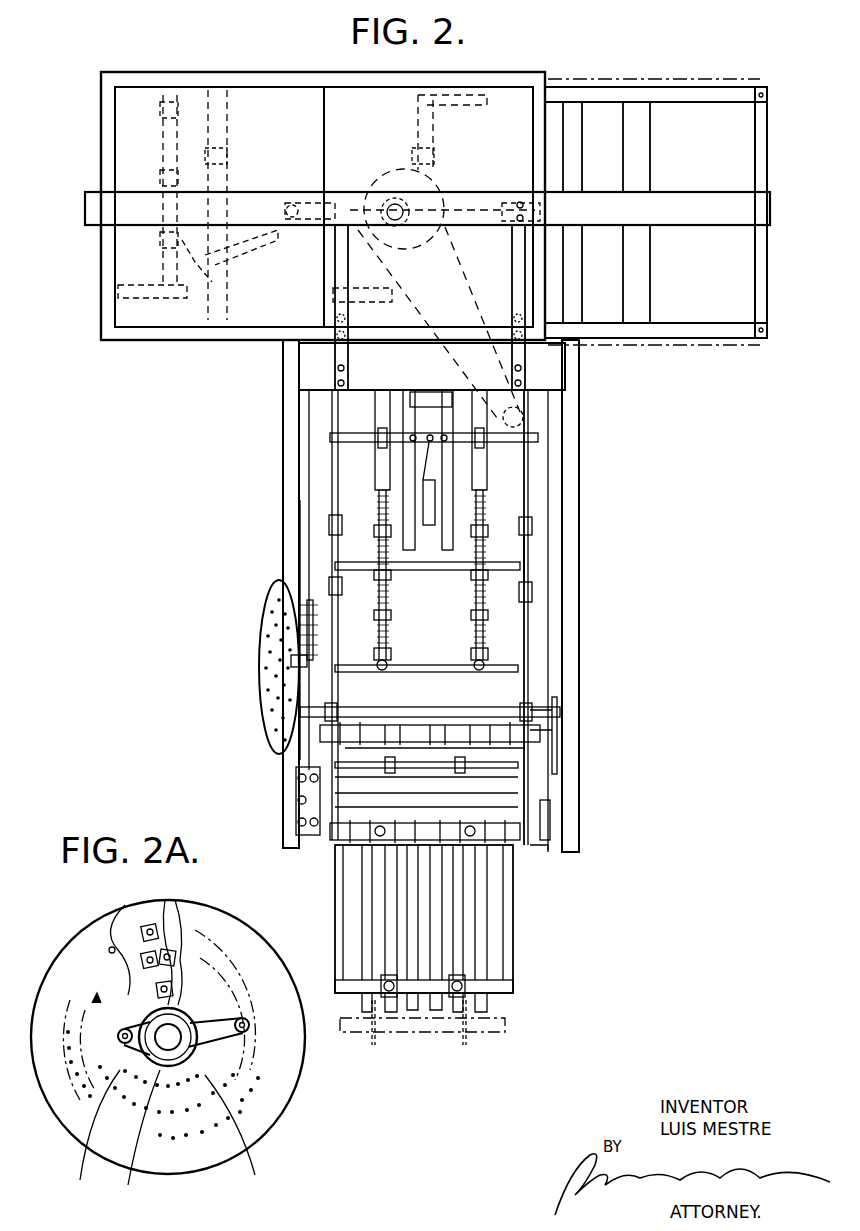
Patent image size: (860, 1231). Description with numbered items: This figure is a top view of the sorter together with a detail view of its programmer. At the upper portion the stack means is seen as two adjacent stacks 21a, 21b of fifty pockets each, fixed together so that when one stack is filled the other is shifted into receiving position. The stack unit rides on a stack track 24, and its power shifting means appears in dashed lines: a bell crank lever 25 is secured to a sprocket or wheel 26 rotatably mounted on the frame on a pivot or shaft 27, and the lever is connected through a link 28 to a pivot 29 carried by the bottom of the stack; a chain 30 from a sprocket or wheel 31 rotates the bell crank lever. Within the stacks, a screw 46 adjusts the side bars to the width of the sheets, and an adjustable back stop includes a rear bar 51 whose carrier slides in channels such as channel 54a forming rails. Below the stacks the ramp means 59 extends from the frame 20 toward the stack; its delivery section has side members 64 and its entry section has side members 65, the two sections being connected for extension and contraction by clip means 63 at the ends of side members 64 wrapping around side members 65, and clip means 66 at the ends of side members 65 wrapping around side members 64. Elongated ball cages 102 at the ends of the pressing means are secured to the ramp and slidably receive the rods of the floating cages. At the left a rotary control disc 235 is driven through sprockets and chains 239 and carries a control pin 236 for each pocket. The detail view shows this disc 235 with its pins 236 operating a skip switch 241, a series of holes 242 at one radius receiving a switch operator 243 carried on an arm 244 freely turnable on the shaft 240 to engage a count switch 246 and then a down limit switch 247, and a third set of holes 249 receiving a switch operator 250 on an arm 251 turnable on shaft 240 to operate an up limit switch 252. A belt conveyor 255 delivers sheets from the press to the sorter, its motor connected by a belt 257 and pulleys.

In FIG. 2, the frame 20 is at (266, 436).
In FIG. 2, the stack of pockets 21a is at (505, 103).
In FIG. 2, the stack of pockets 21b is at (300, 100).
In FIG. 2, the stack track 24 is at (697, 92).
In FIG. 2, the bell crank lever 25 is at (308, 195).
In FIG. 2, the sprocket or wheel 26 is at (369, 182).
In FIG. 2, the pivot or shaft 27 is at (412, 204).
In FIG. 2, the link 28 is at (473, 208).
In FIG. 2, the pivot 29 is at (522, 203).
In FIG. 2, the chain 30 is at (458, 262).
In FIG. 2, the sprocket or wheel 31 is at (527, 415).
In FIG. 2, the screw 46 is at (168, 152).
In FIG. 2, the rear bar 51 is at (230, 160).
In FIG. 2, the channel 54a is at (205, 95).
In FIG. 2, the ramp means 59 is at (548, 576).
In FIG. 2, the clip means 63 is at (530, 583).
In FIG. 2, the side members 64 is at (338, 392).
In FIG. 2, the side members 65 is at (335, 625).
In FIG. 2, the clip means 66 is at (530, 524).
In FIG. 2, the elongated ball cage 102 is at (380, 455).
In FIG. 2, the rotary control disc 235 is at (270, 732).
In FIG. 2A, the rotary control disc 235 is at (60, 972).
In FIG. 2, the control pin 236 is at (263, 622).
In FIG. 2A, the control pin 236 is at (110, 948).
In FIG. 2, the sprockets and chains 239 is at (300, 500).
In FIG. 2A, the shaft 240 is at (200, 1100).
In FIG. 2A, the skip switch 241 is at (170, 900).
In FIG. 2A, the holes 242 is at (230, 1085).
In FIG. 2A, the switch operator or pin 243 is at (250, 1025).
In FIG. 2A, the arm 244 is at (232, 1045).
In FIG. 2A, the count switch 246 is at (152, 945).
In FIG. 2A, the limit switch 247 is at (175, 962).
In FIG. 2A, the holes 249 is at (165, 1082).
In FIG. 2A, the switch operator or pin 250 is at (125, 1043).
In FIG. 2A, the arm 251 is at (144, 1040).
In FIG. 2A, the up limit switch 252 is at (172, 990).
In FIG. 2, the belt conveyor 255 is at (518, 930).
In FIG. 2, the belt 257 is at (548, 810).